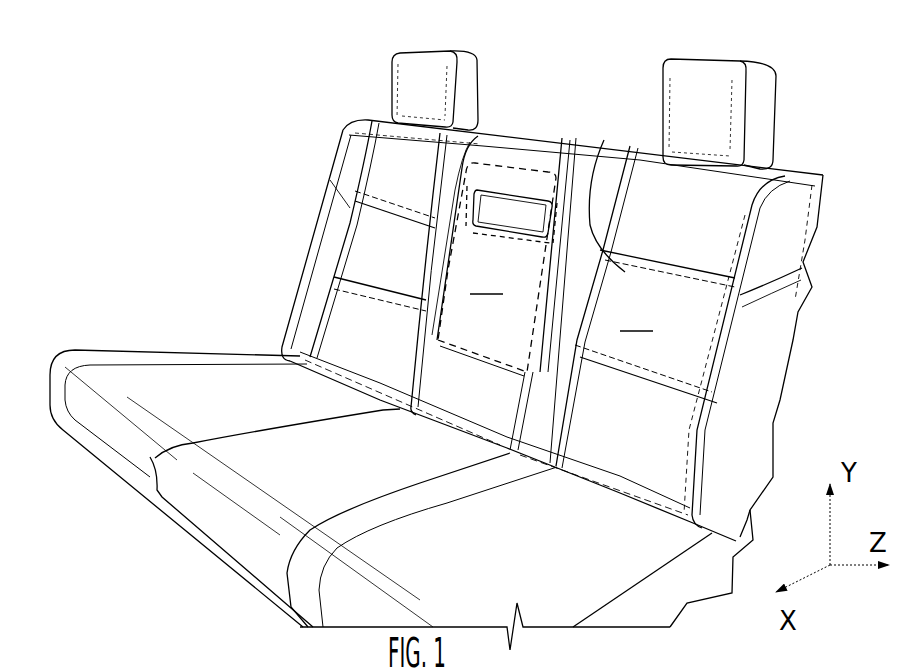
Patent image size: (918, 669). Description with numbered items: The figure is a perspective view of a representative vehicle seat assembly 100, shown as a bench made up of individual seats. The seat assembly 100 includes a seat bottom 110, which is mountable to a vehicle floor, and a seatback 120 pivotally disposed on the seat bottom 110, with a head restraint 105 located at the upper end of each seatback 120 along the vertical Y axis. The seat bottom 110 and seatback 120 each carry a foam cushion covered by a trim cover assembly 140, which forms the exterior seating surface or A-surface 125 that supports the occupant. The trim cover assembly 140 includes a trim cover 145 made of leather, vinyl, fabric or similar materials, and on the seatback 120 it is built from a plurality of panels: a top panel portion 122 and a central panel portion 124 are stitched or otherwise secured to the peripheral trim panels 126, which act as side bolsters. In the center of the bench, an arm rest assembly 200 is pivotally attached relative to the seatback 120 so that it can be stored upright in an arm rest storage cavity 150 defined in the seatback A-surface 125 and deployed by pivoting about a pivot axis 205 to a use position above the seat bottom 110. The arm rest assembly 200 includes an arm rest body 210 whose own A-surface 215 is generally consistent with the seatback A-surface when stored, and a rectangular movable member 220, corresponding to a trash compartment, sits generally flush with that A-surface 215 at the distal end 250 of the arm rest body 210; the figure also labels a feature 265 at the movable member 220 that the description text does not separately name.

The seat assembly 100 is at (216, 121).
The head restraint 105 is at (688, 102).
The seat bottom 110 is at (238, 377).
The seatback 120 is at (297, 252).
The top panel portion 122 is at (705, 248).
The central panel portion 124 is at (676, 350).
The A-surface 125 is at (636, 316).
The peripheral trim panels 126 is at (770, 390).
The trim cover assembly 140 is at (297, 283).
The trim cover 145 is at (333, 293).
The arm rest storage cavity 150 is at (577, 210).
The arm rest assembly 200 is at (437, 312).
The pivot axis 205 is at (473, 355).
The arm rest body 210 is at (483, 307).
The A-surface of the arm rest body 215 is at (482, 293).
The movable member 220 is at (490, 212).
The distal end 250 is at (560, 190).
The pocket 265 is at (514, 188).